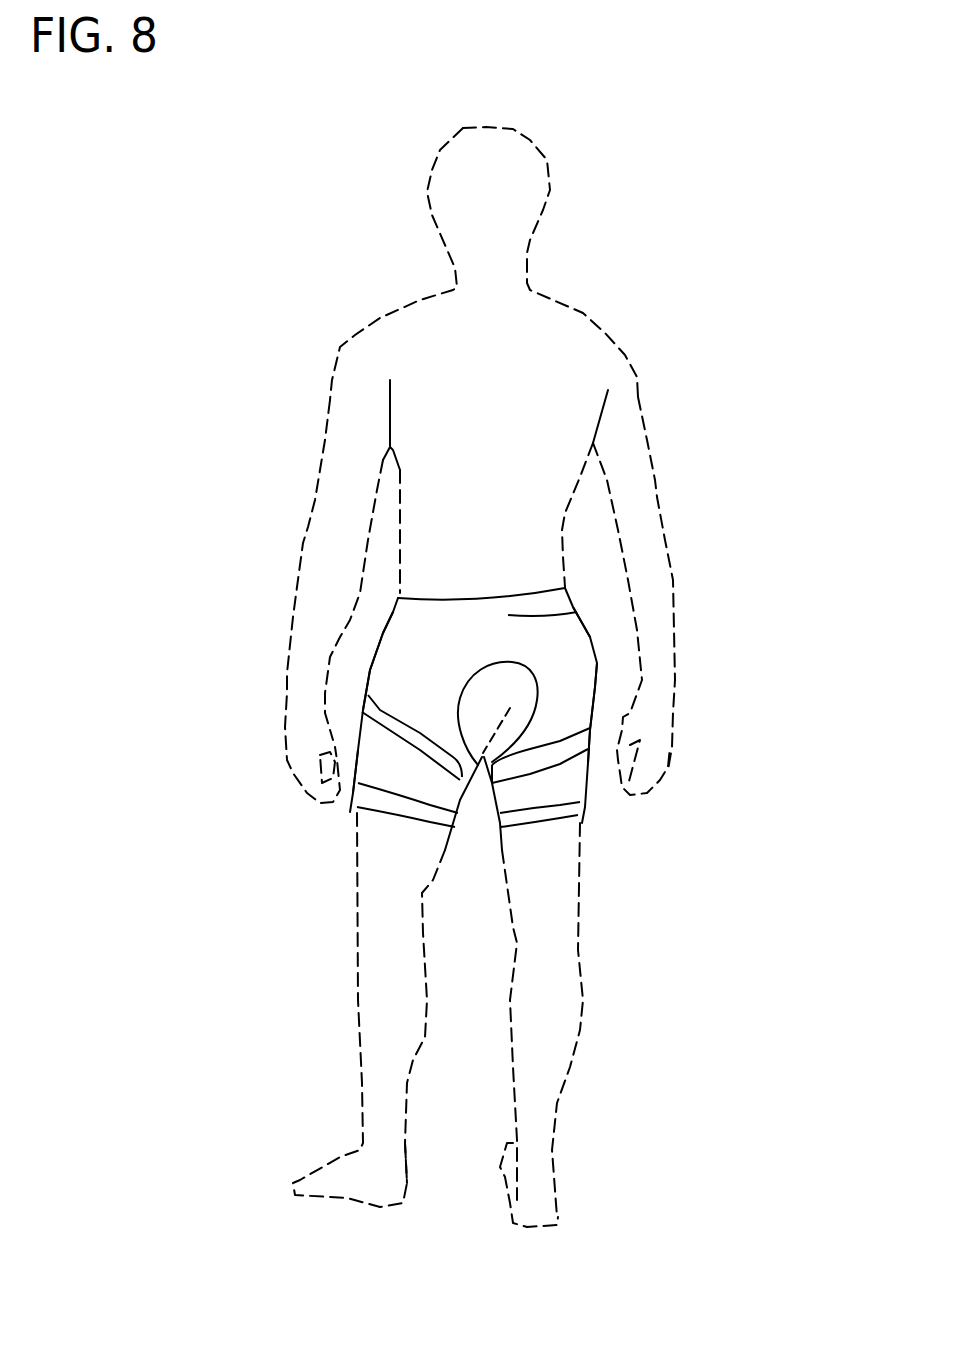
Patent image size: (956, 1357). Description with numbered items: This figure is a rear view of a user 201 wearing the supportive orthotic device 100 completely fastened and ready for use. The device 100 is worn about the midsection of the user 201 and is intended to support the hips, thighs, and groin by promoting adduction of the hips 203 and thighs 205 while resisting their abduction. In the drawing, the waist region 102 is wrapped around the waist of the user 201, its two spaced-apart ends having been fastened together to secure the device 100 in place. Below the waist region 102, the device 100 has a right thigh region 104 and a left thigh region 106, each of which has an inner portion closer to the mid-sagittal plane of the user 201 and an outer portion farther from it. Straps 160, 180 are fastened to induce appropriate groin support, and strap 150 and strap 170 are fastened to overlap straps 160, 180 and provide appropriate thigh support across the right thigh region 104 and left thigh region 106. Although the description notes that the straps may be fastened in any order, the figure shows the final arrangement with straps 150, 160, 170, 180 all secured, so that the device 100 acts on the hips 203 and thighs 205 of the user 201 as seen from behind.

The user 201 is at (593, 310).
The supportive orthotic device 100 is at (505, 582).
The waist region 102 is at (577, 612).
The hips 203 is at (383, 633).
The left thigh region 106 is at (368, 668).
The right thigh region 104 is at (598, 687).
The strap 180 is at (367, 707).
The strap 160 is at (572, 745).
The thighs 205 is at (360, 750).
The strap 150 is at (573, 795).
The strap 170 is at (387, 773).